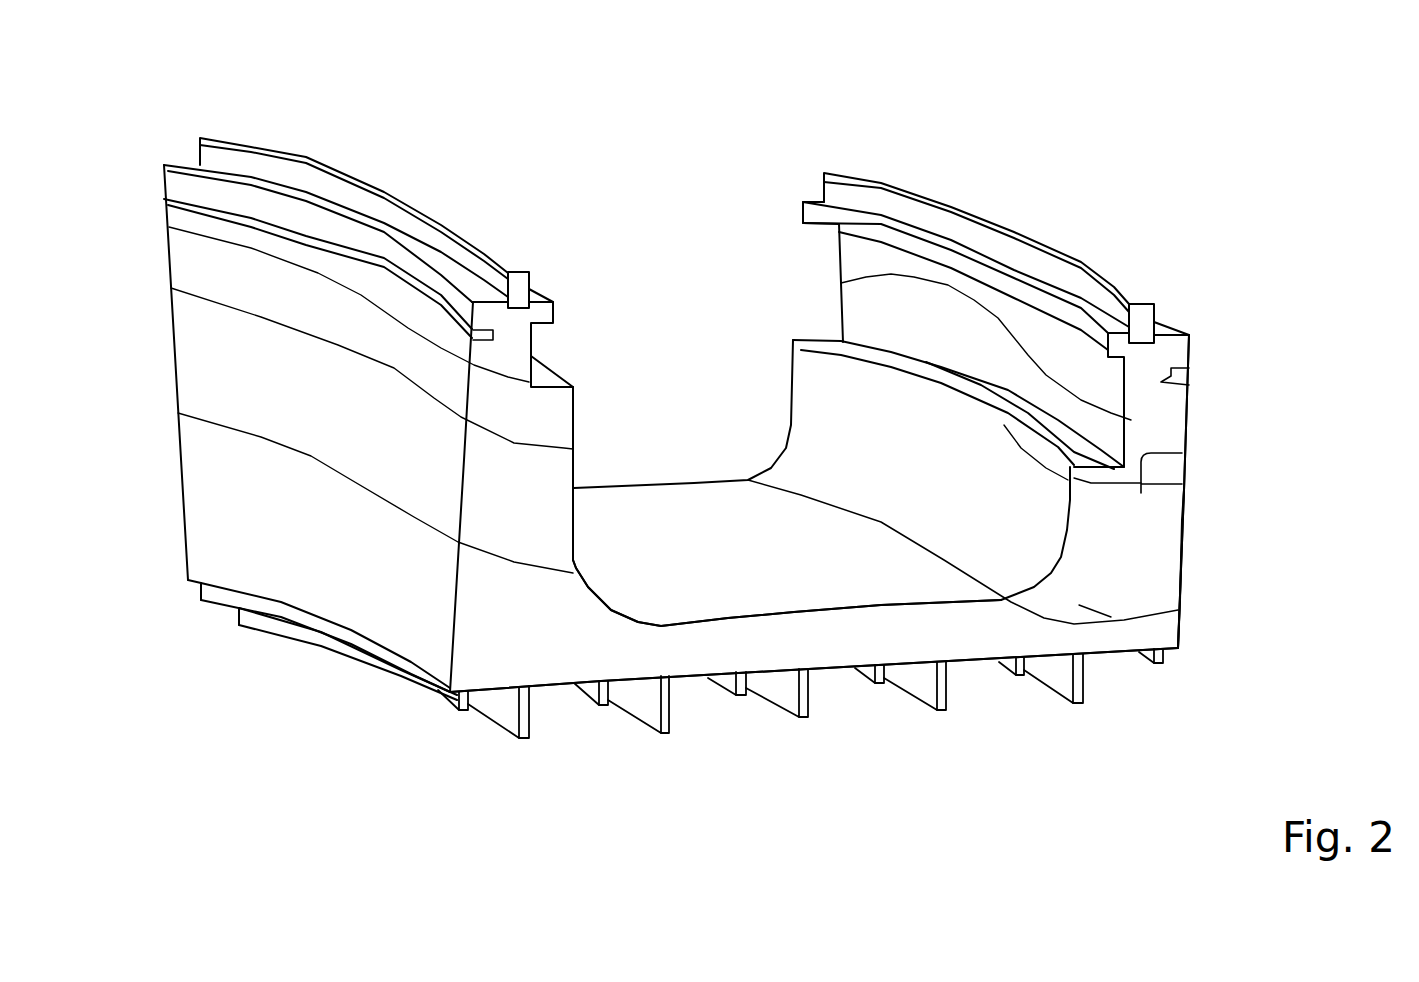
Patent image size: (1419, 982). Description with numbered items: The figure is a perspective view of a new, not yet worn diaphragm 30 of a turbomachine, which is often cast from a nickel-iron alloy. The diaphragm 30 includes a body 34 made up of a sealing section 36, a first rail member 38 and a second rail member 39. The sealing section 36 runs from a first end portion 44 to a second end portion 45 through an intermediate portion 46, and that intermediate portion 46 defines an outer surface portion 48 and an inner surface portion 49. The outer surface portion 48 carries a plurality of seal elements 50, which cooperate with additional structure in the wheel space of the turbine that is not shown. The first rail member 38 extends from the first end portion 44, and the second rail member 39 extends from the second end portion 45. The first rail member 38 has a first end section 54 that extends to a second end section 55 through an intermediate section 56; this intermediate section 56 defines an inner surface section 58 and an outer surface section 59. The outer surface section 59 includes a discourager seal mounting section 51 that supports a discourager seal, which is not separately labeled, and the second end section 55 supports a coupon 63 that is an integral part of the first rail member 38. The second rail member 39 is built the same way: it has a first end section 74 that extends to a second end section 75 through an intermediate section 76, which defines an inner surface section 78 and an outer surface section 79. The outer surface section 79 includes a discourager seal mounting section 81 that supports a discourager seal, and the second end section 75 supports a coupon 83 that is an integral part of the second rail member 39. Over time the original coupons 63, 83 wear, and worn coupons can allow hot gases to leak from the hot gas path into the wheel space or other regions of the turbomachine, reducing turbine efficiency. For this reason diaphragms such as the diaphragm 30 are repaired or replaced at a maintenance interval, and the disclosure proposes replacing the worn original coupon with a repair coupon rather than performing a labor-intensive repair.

The diaphragm 30 is at (1146, 679).
The body 34 is at (1228, 640).
The sealing section 36 is at (814, 715).
The first rail member 38 is at (342, 387).
The second rail member 39 is at (1222, 483).
The first end portion 44 is at (517, 735).
The second end portion 45 is at (1187, 705).
The intermediate portion 46 is at (646, 738).
The outer surface portion 48 is at (969, 715).
The inner surface portion 49 is at (787, 456).
The seal elements 50 is at (763, 743).
The discourager seal mounting section 51 is at (269, 251).
The first end section 54 is at (354, 654).
The second end section 55 is at (508, 413).
The intermediate section 56 is at (342, 493).
The inner surface section 58 is at (577, 374).
The outer surface section 59 is at (297, 305).
The coupon 63 is at (353, 167).
The first end section 74 is at (1232, 564).
The second end section 75 is at (1239, 381).
The intermediate section 76 is at (1195, 441).
The inner surface section 78 is at (911, 404).
The outer surface section 79 is at (1259, 446).
The discourager seal mounting section 81 is at (1072, 287).
The coupon 83 is at (976, 211).